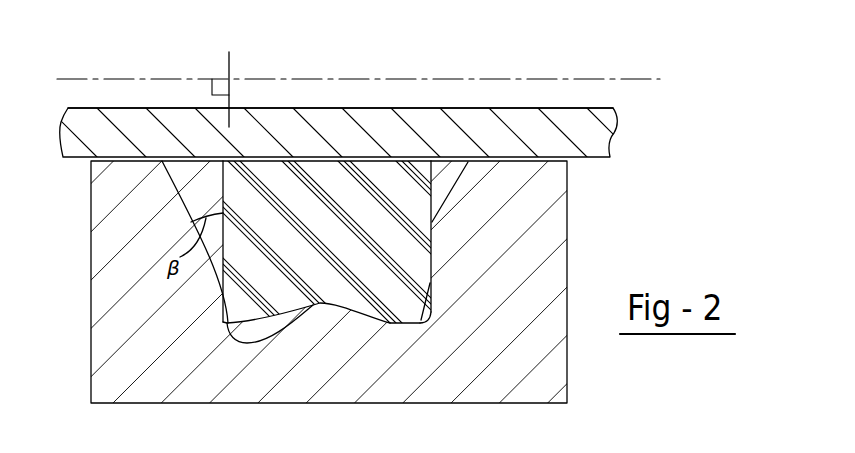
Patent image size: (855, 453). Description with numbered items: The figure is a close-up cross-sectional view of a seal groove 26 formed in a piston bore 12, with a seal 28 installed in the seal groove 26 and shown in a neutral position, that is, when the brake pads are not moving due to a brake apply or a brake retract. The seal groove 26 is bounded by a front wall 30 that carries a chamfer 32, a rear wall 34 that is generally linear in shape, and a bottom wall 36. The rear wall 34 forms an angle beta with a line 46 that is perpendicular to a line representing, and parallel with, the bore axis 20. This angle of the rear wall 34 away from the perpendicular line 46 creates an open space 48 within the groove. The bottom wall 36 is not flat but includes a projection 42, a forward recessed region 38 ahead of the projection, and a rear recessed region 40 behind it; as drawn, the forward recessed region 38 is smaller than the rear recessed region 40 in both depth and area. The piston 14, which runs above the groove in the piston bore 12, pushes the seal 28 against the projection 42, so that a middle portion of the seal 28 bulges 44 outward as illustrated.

The piston bore 12 is at (68, 118).
The piston 14 is at (272, 117).
The bore axis 20 is at (597, 77).
The seal groove 26 is at (416, 92).
The seal 28 is at (335, 228).
The front wall 30 is at (433, 230).
The chamfer 32 is at (463, 180).
The rear wall 34 is at (183, 216).
The bottom wall 36 is at (361, 347).
The forward recessed region 38 is at (408, 323).
The rear recessed region 40 is at (237, 345).
The projection 42 is at (320, 305).
The bulge 44 is at (440, 294).
The line perpendicular to the bore axis 46 is at (227, 62).
The open space 48 is at (190, 187).